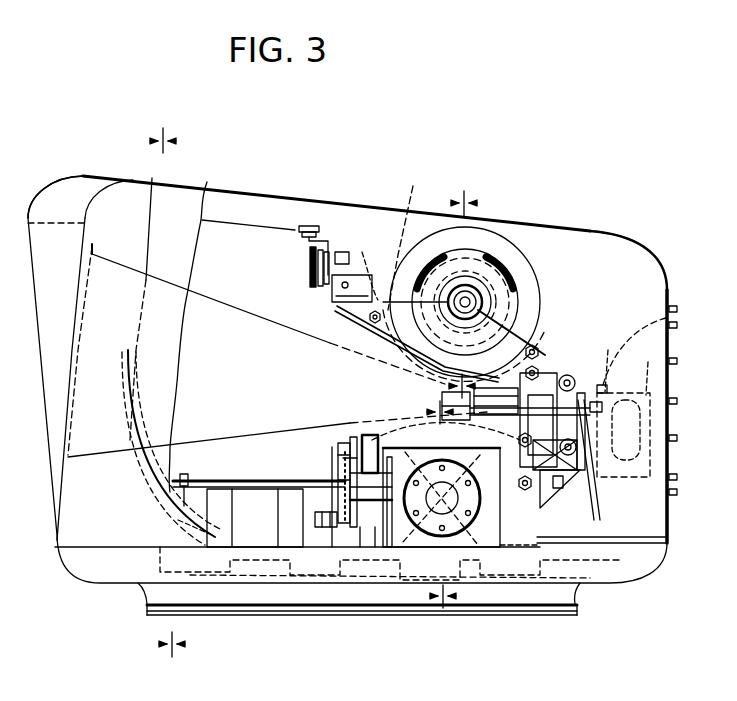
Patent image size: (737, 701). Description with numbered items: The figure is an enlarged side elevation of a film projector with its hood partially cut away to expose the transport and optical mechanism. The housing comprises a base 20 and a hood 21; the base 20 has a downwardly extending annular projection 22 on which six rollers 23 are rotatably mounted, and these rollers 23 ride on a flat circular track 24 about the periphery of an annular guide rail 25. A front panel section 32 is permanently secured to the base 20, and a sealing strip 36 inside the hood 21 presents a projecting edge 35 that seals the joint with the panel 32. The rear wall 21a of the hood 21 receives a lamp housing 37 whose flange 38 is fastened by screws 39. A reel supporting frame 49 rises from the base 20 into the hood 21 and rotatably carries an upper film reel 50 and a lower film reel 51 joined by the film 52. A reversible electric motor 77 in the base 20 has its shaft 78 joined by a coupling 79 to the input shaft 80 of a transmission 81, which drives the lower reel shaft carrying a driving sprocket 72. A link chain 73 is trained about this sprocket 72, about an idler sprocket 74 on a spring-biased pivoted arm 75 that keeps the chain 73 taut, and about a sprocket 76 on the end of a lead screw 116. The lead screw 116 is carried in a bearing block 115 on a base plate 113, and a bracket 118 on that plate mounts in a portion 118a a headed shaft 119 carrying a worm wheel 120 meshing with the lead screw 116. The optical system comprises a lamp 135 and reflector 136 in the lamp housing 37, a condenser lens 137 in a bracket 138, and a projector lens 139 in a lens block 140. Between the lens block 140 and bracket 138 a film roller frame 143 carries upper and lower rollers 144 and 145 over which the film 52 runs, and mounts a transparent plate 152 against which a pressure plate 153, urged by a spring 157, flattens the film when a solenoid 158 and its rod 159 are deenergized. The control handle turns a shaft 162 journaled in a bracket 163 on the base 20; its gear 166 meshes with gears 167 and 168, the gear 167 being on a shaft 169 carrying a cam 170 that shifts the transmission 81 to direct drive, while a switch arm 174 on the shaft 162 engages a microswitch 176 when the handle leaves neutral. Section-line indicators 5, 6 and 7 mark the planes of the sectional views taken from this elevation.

The base 20 is at (653, 568).
The hood 21 is at (588, 232).
The rear wall 21a is at (670, 293).
The annular projection 22 is at (576, 598).
The rollers 23 is at (357, 612).
The flat circular track 24 is at (441, 616).
The guide rail 25 is at (559, 617).
The front panel section 32 is at (86, 178).
The projecting edge 35 is at (114, 343).
The sealing strip 36 is at (143, 336).
The lamp housing 37 is at (633, 332).
The flange 38 is at (671, 497).
The screws 39 is at (677, 313).
The reel supporting frame 49 is at (380, 331).
The film reel 50 is at (538, 293).
The film reel 51 is at (413, 428).
The film 52 is at (546, 356).
The sprocket 72 is at (456, 526).
The link belt or chain 73 is at (372, 390).
The idler sprocket 74 is at (548, 500).
The pivoted arm 75 is at (529, 516).
The sprocket 76 is at (372, 282).
The reversible electric motor 77 is at (243, 520).
The motor shaft 78 is at (318, 486).
The coupling 79 is at (330, 535).
The input shaft 80 is at (368, 545).
The transmission 81 is at (530, 546).
The base plate 113 is at (410, 239).
The bearing block 115 is at (335, 293).
The lead screw 116 is at (347, 306).
The bracket 118 is at (340, 268).
The portion of bracket 118a is at (345, 270).
The headed shaft 119 is at (350, 275).
The worm wheel 120 is at (349, 262).
The lamp 135 is at (612, 378).
The reflector 136 is at (655, 373).
The condenser lens 137 is at (598, 448).
The bracket 138 is at (598, 398).
The projector lens 139 is at (526, 360).
The lens block 140 is at (553, 358).
The film roller frame 143 is at (575, 382).
The upper roller 144 is at (585, 401).
The lower roller 145 is at (556, 486).
The transparent plate 152 is at (580, 468).
The pressure plate 153 is at (586, 466).
The spring 157 is at (604, 408).
The solenoid 158 is at (445, 388).
The rod 159 is at (602, 395).
The shaft 162 is at (204, 490).
The bracket 163 is at (343, 458).
The gear 166 is at (337, 480).
The gear 167 is at (336, 456).
The gear 168 is at (345, 441).
The shaft 169 is at (368, 482).
The cam 170 is at (360, 507).
The switch arm 174 is at (192, 446).
The microswitch 176 is at (178, 529).
The section line 5- 5 is at (162, 393).
The section line 6- 6 is at (447, 502).
The section line 7- 7 is at (467, 293).